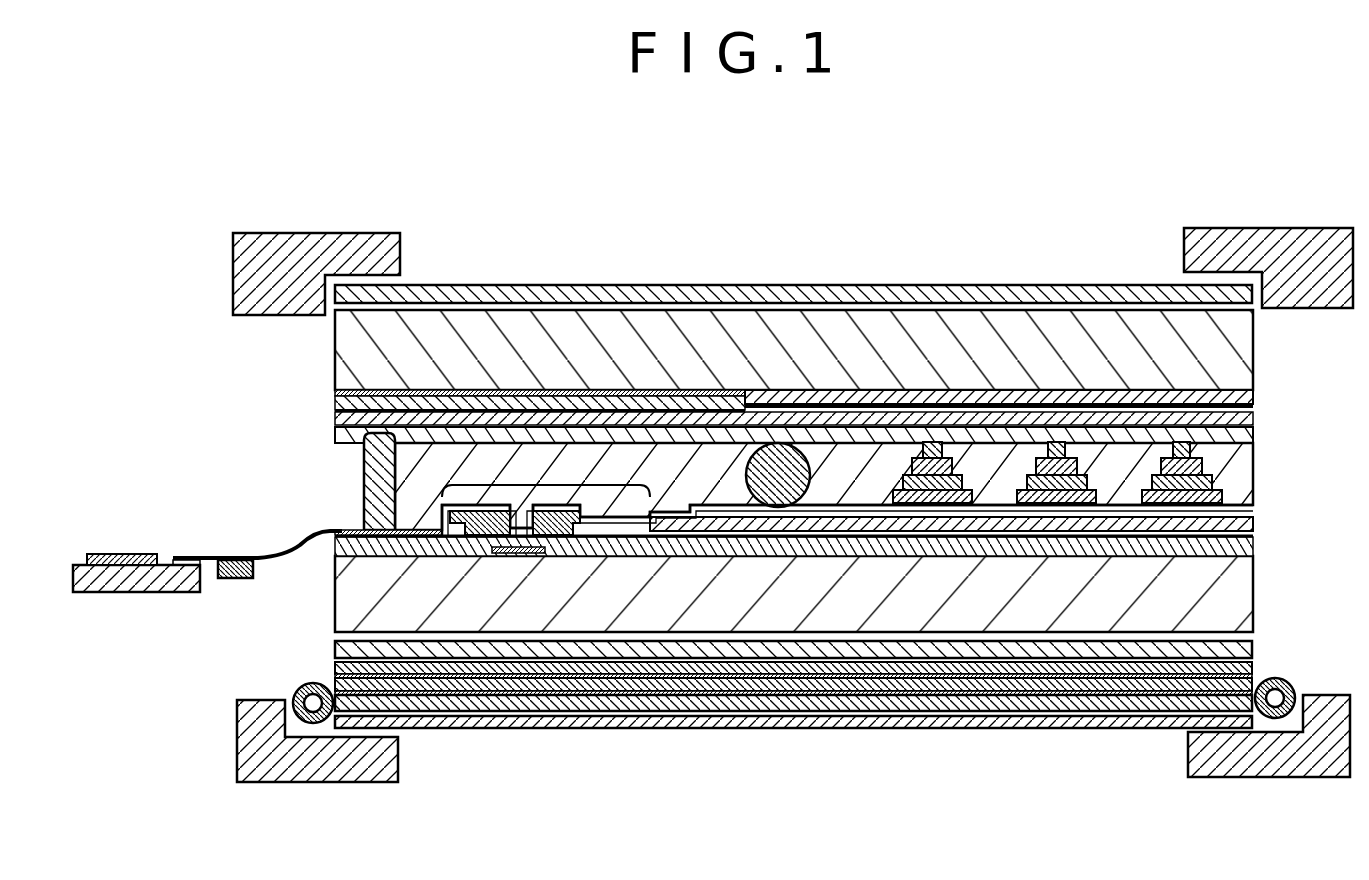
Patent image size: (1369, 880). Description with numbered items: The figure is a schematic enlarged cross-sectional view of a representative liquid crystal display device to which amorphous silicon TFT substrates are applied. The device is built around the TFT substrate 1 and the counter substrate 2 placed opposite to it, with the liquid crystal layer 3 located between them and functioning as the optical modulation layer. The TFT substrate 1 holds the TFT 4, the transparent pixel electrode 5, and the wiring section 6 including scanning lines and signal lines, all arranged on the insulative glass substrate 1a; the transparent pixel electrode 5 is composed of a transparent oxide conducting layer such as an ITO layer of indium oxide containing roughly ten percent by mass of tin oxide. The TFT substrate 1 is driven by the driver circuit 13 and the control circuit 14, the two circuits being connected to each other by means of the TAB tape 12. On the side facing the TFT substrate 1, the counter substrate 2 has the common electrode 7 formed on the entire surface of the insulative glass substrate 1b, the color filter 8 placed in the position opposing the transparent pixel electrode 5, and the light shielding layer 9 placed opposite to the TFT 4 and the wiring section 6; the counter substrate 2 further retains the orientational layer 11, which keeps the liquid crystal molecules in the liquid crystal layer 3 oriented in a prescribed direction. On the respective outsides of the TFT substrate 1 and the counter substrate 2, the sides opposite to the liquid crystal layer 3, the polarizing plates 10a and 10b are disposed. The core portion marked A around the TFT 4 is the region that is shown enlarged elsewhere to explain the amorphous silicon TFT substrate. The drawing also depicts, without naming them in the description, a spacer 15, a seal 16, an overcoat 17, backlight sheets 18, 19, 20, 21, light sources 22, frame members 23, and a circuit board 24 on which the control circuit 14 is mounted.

The TFT substrate 1 is at (838, 510).
The insulative glass substrate 1a is at (1237, 608).
The insulative glass substrate 1b is at (1237, 326).
The counter substrate 2 is at (800, 336).
The liquid crystal layer 3 is at (1237, 474).
The TFT 4 is at (518, 510).
The transparent pixel electrode 5 is at (990, 515).
The wiring section 6 is at (560, 548).
The common electrode 7 is at (920, 408).
The color filter 8 is at (1030, 397).
The light shielding layer 9 is at (455, 393).
The polarizing plate 10a is at (1138, 652).
The polarizing plate 10b is at (845, 290).
The orientational layer 11 is at (1135, 434).
The TAB tape 12 is at (273, 551).
The driver circuit 13 is at (236, 579).
The control circuit 14 is at (126, 555).
The spacer 15 is at (778, 462).
The sealing material 16 is at (368, 470).
The overcoat layer 17 is at (345, 407).
The diffusion sheet 18 is at (1058, 670).
The prism sheet 19 is at (752, 690).
The light guide plate 20 is at (618, 706).
The reflection sheet 21 is at (458, 726).
The light source 22 is at (305, 685).
The frame 23 is at (280, 242).
The printed circuit board 24 is at (124, 593).
The core portion A is at (547, 502).